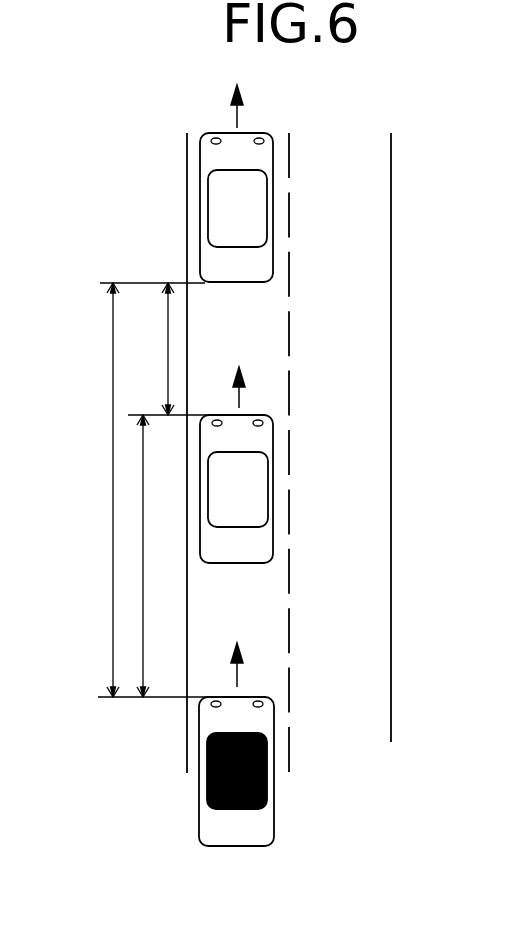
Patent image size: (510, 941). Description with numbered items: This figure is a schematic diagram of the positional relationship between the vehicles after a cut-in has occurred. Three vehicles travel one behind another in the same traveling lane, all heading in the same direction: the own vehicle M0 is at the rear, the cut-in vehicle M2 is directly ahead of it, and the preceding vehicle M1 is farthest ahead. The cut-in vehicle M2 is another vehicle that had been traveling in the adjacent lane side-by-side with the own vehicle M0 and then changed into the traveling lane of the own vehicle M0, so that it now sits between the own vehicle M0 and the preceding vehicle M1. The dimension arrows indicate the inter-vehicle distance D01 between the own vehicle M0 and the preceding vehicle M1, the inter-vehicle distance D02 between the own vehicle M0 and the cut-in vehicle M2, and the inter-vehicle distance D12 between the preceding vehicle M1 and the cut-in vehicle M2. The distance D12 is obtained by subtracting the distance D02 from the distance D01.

The own vehicle M0 is at (239, 837).
The preceding vehicle M1 is at (238, 274).
The cut-in vehicle M2 is at (245, 553).
The inter-vehicle distance between the own vehicle and the preceding vehicle D01 is at (94, 490).
The inter-vehicle distance between the own vehicle and the cut-in vehicle D02 is at (162, 556).
The inter-vehicle distance between the preceding vehicle and the cut-in vehicle D12 is at (148, 349).